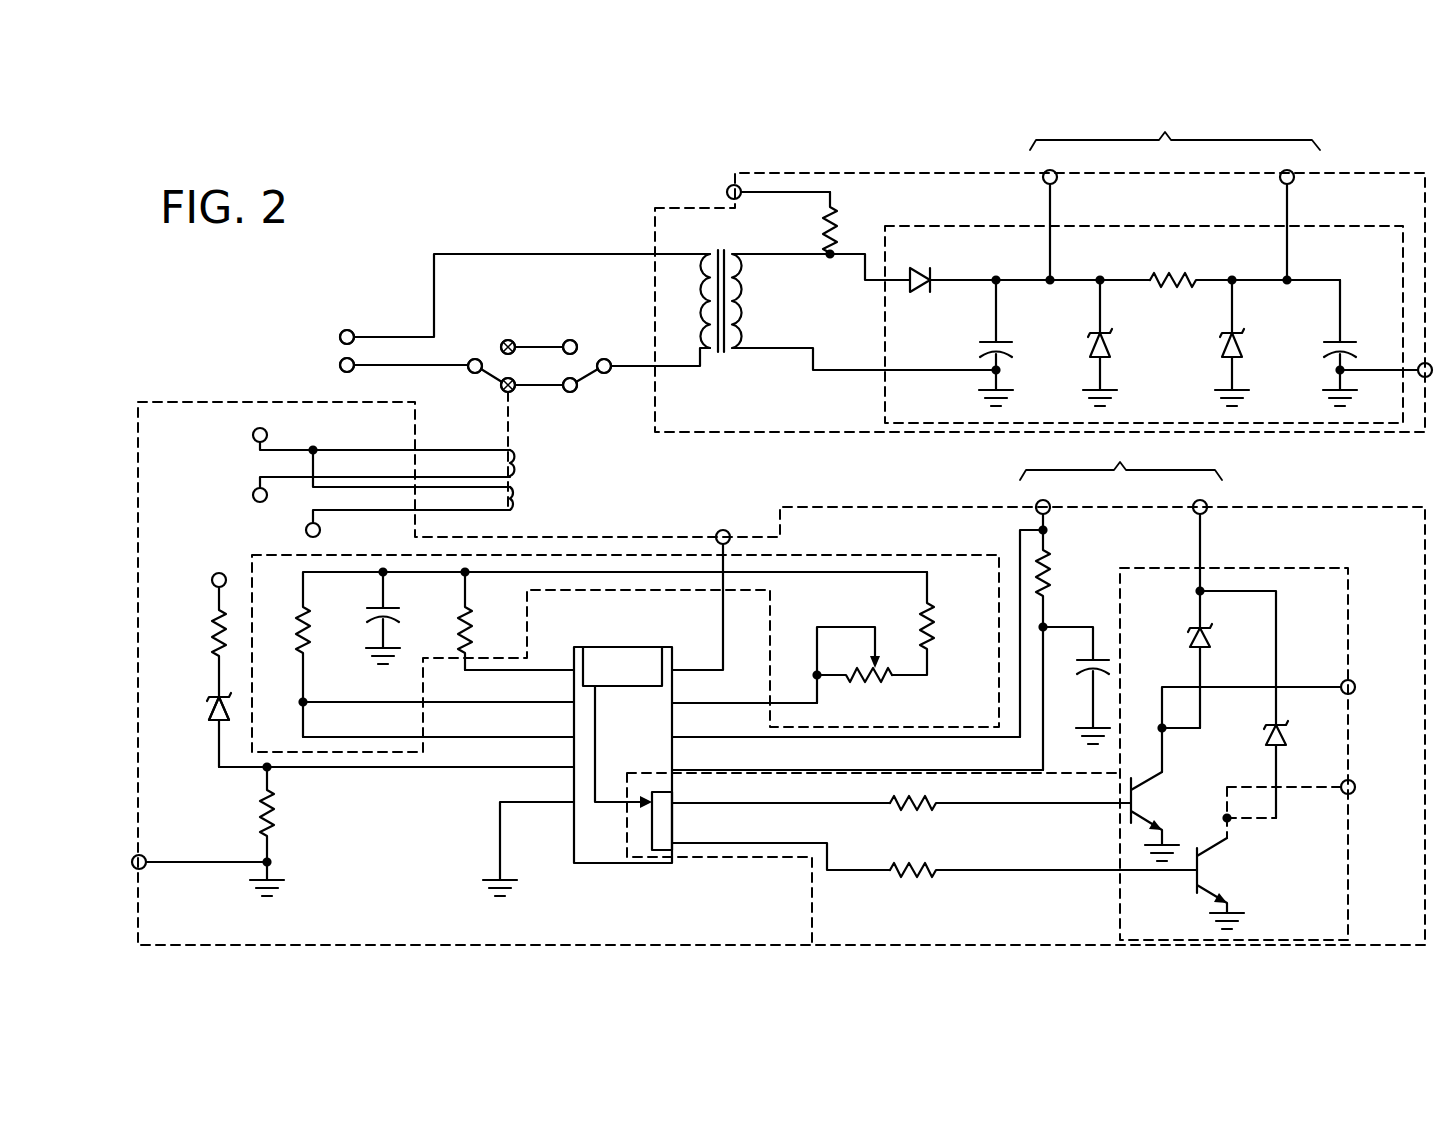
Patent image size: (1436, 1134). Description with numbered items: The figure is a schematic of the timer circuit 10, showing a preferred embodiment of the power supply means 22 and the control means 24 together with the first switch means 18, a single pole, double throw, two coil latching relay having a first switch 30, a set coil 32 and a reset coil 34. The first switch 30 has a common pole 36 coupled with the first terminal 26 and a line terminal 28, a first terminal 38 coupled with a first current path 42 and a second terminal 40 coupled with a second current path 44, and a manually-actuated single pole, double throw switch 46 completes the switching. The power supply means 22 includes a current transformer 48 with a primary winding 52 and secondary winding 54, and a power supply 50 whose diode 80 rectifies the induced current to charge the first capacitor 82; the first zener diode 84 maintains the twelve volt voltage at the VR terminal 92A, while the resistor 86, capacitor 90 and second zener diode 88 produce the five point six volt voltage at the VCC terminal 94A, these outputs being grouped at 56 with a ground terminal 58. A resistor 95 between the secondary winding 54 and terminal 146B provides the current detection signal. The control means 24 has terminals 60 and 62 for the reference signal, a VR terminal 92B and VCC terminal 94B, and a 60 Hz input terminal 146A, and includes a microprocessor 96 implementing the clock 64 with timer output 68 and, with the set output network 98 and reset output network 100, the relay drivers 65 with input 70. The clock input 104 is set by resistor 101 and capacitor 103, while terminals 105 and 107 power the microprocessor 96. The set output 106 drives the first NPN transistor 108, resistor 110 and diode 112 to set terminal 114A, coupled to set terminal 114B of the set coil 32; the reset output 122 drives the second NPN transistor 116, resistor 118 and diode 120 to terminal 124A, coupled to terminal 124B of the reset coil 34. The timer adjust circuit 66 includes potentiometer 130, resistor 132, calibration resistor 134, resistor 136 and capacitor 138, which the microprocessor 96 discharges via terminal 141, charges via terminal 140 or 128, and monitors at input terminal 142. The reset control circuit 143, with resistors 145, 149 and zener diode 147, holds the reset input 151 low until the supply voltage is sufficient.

The timer circuit 10 is at (229, 308).
The first switch means 18 is at (282, 375).
The power supply means 22 is at (786, 166).
The control means 24 is at (172, 392).
The first terminal 26 is at (340, 363).
The line terminal 28 is at (340, 333).
The first switch 30 is at (488, 352).
The set coil 32 is at (522, 494).
The reset coil 34 is at (522, 462).
The common terminal or pole 36 is at (468, 368).
The first terminal of first switch 38 is at (500, 390).
The second terminal of first switch 40 is at (508, 340).
The first current path 42 is at (534, 394).
The second current path 44 is at (534, 347).
The single pole, double throw switch 46 is at (592, 375).
The current transformer 48 is at (716, 252).
The power supply 50 is at (928, 219).
The transformer primary winding 52 is at (704, 302).
The secondary winding 54 is at (743, 300).
The power supply outputs 56 is at (1175, 128).
The ground terminal 58 is at (1416, 378).
The first terminal of control means 60 is at (1121, 458).
The second terminal of control means 62 is at (144, 872).
The clock 64 is at (621, 686).
The relay drivers 65 is at (800, 905).
The timer adjust circuit 66 is at (934, 551).
The timer output 68 is at (602, 698).
The input of relay drivers 70 is at (600, 799).
The diode 80 is at (922, 270).
The first capacitor 82 is at (984, 338).
The first zener diode 84 is at (1090, 358).
The resistor 86 is at (1162, 272).
The second zener diode 88 is at (1220, 354).
The capacitor 90 is at (1336, 374).
The VR terminal of power supply 92A is at (1042, 172).
The VR terminal of control means 92B is at (252, 436).
The VCC terminal of power supply 94A is at (1278, 171).
The VCC terminal of control means 94B is at (1052, 505).
The resistor 95 is at (833, 215).
The microprocessor 96 is at (612, 866).
The set output network 98 is at (1222, 674).
The reset output network 100 is at (1292, 773).
The resistor 101 is at (1051, 582).
The capacitor 103 is at (1095, 649).
The clock input 104 is at (680, 772).
The terminal 105 is at (680, 739).
The set output 106 is at (680, 805).
The terminal 107 is at (570, 802).
The first NPN transistor 108 is at (1138, 806).
The resistor 110 is at (911, 814).
The diode 112 is at (1212, 505).
The set terminal 114A is at (1354, 684).
The set terminal of set coil 114B is at (320, 530).
The second NPN transistor 116 is at (1208, 882).
The resistor 118 is at (911, 881).
The diode 120 is at (1262, 738).
The reset output 122 is at (680, 846).
The terminal 124A is at (1356, 784).
The terminal of reset coil 124B is at (252, 492).
The terminal 128 is at (678, 705).
The potentiometer 130 is at (882, 688).
The resistor 132 is at (936, 638).
The calibration resistor 134 is at (472, 636).
The resistor 136 is at (296, 630).
The capacitor 138 is at (388, 616).
The terminal 140 is at (572, 669).
The terminal 141 is at (570, 702).
The input terminal 142 is at (570, 737).
The reset control circuit 143 is at (190, 690).
The resistor 145 is at (212, 572).
The 60 Hz input terminal 146A is at (722, 529).
The 60 Hz output 146B is at (730, 199).
The zener diode 147 is at (208, 730).
The resistor 149 is at (258, 817).
The reset input 151 is at (570, 767).